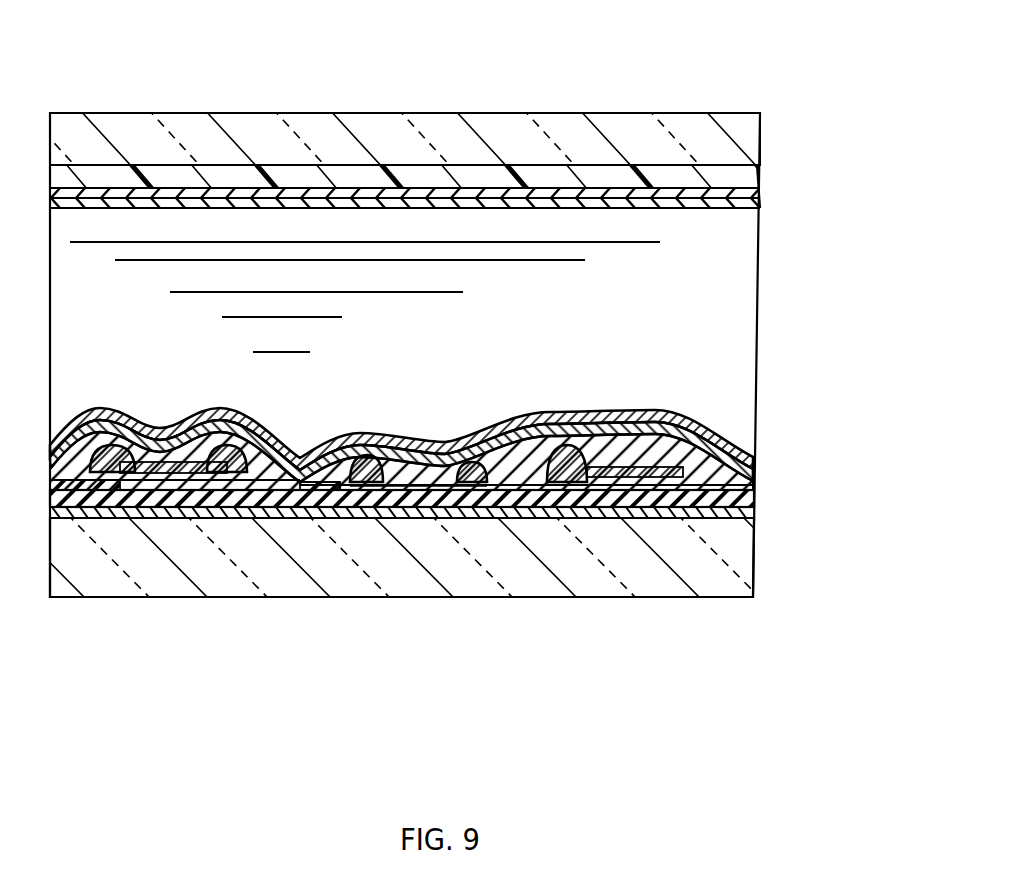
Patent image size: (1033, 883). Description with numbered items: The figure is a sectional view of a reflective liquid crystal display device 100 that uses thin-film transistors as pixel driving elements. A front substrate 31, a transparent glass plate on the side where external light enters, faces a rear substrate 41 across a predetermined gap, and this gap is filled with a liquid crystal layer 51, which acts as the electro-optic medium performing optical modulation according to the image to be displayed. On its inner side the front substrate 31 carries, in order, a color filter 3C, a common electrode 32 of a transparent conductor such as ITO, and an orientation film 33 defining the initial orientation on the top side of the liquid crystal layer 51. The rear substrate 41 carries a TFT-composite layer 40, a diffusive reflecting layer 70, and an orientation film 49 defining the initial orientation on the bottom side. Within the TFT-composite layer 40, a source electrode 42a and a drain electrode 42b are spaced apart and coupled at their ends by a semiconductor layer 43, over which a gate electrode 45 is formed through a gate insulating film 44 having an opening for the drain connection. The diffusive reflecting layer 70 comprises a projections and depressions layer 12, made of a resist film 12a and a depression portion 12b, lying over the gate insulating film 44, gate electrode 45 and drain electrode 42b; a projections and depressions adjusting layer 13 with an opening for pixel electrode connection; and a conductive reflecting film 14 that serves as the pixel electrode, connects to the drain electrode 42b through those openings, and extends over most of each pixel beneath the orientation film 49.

The liquid crystal display device 100 is at (776, 100).
The front substrate 31 is at (140, 135).
The common electrode 32 is at (245, 182).
The orientation film 33 is at (346, 200).
The color filter 3C is at (758, 180).
The liquid crystal layer 51 is at (535, 225).
The orientation film 49 is at (690, 417).
The diffusive reflecting layer 70 is at (762, 455).
The TFT-composite layer 40 is at (762, 490).
The rear substrate 41 is at (62, 580).
The source electrode 42a is at (100, 482).
The drain electrode 42b is at (320, 486).
The semiconductor layer 43 is at (163, 512).
The gate insulating film 44 is at (200, 475).
The gate electrode 45 is at (255, 470).
The projections and depressions layer 12 is at (485, 700).
The resist film 12a is at (372, 482).
The depression portion 12b is at (466, 484).
The projections and depressions adjusting layer 13 is at (555, 462).
The reflecting film 14 is at (500, 478).